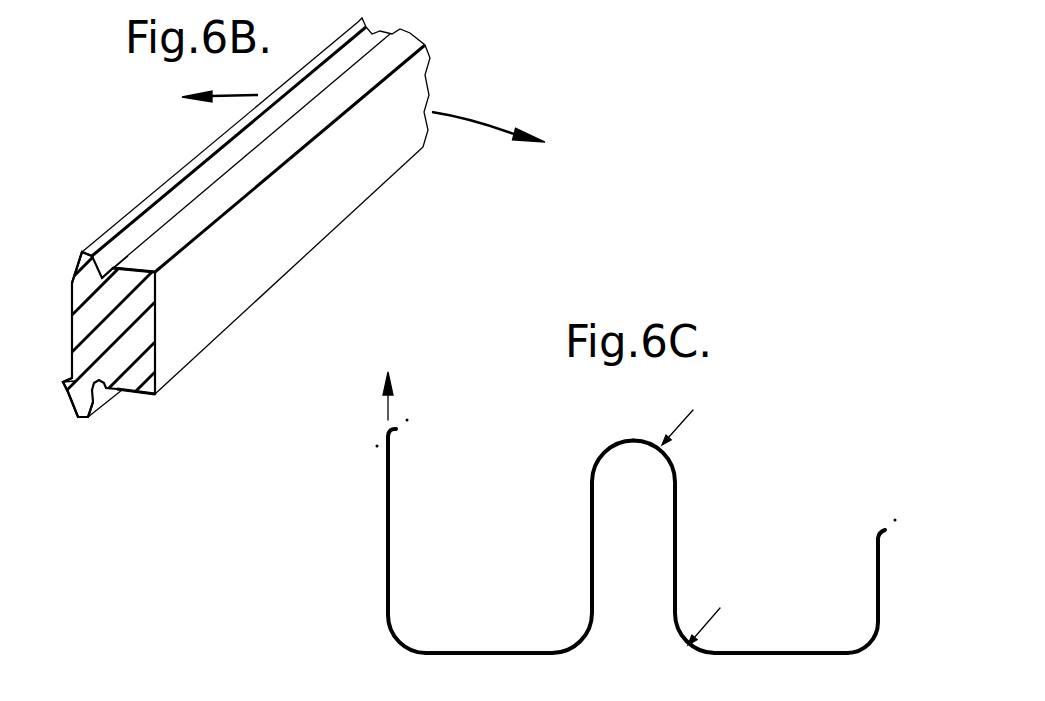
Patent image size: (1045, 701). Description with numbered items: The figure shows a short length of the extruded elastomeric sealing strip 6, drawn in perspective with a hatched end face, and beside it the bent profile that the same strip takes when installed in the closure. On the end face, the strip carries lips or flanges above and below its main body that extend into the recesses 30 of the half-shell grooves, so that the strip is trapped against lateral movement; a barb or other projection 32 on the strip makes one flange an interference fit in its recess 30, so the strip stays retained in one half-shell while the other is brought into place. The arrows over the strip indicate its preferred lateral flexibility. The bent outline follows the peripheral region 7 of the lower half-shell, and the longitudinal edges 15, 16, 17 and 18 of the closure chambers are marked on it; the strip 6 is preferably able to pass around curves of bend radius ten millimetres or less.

In FIG. 6B, the sealing strip 6 is at (300, 235).
In FIG. 6B, the recess 30 is at (82, 252).
In FIG. 6B, the barb or other projection 32 is at (63, 383).
In FIG. 6C, the peripheral region 7 is at (386, 532).
In FIG. 6C, the longitudinal edge of chamber 15 is at (393, 488).
In FIG. 6C, the longitudinal edge of chamber 16 is at (590, 517).
In FIG. 6C, the longitudinal edge of chamber 17 is at (677, 520).
In FIG. 6C, the longitudinal edge of chamber 18 is at (873, 592).